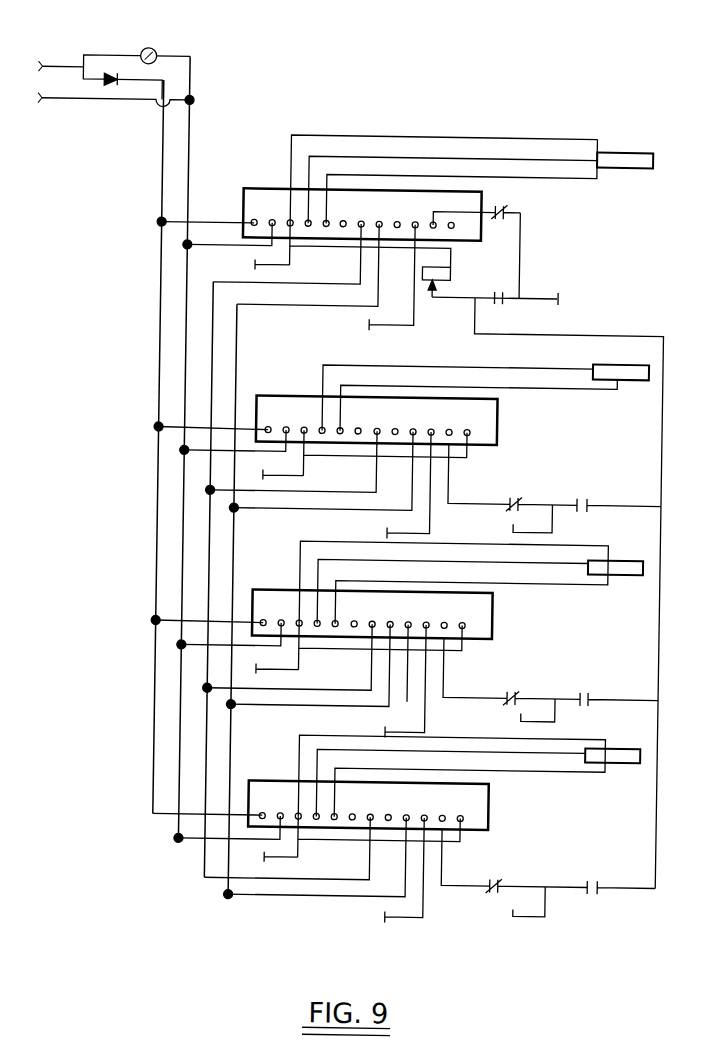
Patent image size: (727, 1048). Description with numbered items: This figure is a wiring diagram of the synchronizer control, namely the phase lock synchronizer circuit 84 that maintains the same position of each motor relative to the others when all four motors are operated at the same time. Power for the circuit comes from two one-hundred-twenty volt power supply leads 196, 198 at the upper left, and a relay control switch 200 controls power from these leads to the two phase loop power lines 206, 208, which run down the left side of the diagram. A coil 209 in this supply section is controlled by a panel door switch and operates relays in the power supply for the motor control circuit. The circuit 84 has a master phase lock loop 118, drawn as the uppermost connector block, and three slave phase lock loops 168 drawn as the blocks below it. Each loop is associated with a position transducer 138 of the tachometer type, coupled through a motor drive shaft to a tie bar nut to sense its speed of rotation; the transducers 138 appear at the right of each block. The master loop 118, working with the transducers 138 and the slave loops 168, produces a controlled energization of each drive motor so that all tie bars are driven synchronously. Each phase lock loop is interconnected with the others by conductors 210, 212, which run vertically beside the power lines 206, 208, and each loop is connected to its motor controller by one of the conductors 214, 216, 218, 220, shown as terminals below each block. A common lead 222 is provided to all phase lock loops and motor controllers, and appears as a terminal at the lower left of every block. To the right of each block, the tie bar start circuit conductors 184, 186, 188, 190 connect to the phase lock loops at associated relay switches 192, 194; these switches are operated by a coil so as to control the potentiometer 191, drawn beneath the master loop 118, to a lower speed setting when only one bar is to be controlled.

The phase lock synchronizer circuit 84 is at (375, 133).
The master phase lock loop 118 is at (451, 187).
The position transducer 138 is at (618, 152).
The slave phase lock loop 168 is at (502, 411).
The conductor 184 is at (562, 293).
The conductor 186 is at (544, 526).
The conductor 188 is at (549, 715).
The conductor 190 is at (558, 906).
The potentiometer 191 is at (451, 276).
The relay switch 192 is at (507, 201).
The relay switch 194 is at (506, 292).
The power supply lead 196 is at (63, 66).
The power supply lead 198 is at (87, 101).
The relay control switch 200 is at (111, 87).
The phase loop power line 206 is at (163, 143).
The phase loop power line 208 is at (190, 78).
The coil 209 is at (154, 50).
The conductor 210 is at (214, 357).
The conductor 212 is at (240, 370).
The conductor 214 is at (398, 328).
The conductor 216 is at (427, 536).
The conductor 218 is at (429, 729).
The conductor 220 is at (415, 913).
The common lead 222 is at (280, 263).